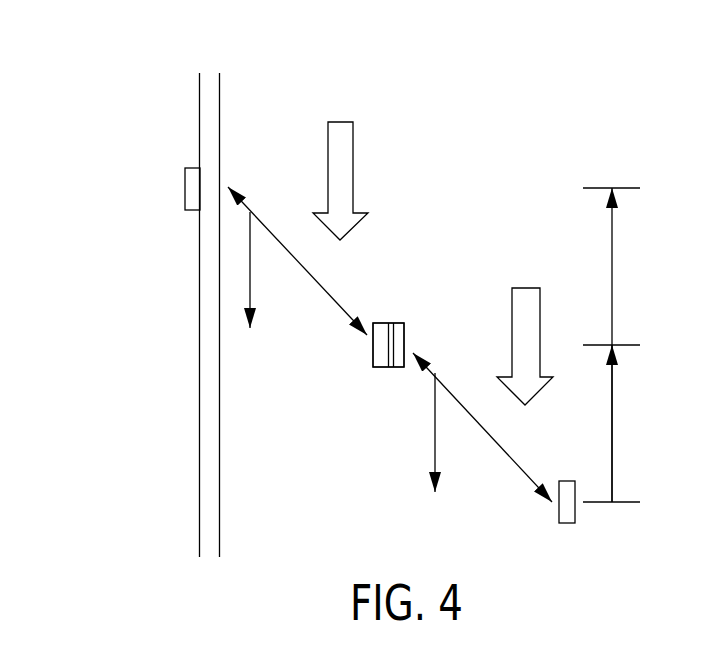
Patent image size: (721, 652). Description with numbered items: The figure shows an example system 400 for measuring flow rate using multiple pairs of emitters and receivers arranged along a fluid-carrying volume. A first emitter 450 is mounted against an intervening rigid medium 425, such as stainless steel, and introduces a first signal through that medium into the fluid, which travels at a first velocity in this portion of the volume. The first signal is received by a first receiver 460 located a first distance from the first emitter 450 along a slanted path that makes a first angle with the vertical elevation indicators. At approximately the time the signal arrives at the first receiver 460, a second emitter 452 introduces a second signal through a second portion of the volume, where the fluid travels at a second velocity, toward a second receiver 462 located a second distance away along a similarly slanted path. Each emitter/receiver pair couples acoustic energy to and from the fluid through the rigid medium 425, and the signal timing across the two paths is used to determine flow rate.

The system for measuring flow rate 400 is at (500, 90).
The intervening rigid medium 425 is at (199, 281).
The first emitter 450 is at (185, 189).
The second emitter 452 is at (405, 332).
The first receiver 460 is at (376, 368).
The second receiver 462 is at (563, 524).